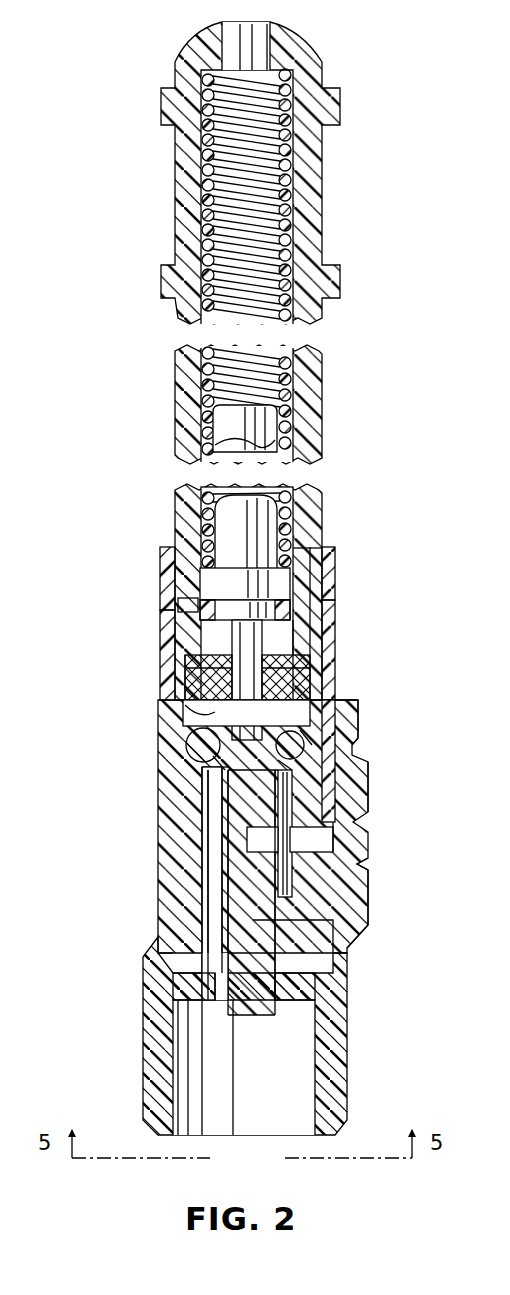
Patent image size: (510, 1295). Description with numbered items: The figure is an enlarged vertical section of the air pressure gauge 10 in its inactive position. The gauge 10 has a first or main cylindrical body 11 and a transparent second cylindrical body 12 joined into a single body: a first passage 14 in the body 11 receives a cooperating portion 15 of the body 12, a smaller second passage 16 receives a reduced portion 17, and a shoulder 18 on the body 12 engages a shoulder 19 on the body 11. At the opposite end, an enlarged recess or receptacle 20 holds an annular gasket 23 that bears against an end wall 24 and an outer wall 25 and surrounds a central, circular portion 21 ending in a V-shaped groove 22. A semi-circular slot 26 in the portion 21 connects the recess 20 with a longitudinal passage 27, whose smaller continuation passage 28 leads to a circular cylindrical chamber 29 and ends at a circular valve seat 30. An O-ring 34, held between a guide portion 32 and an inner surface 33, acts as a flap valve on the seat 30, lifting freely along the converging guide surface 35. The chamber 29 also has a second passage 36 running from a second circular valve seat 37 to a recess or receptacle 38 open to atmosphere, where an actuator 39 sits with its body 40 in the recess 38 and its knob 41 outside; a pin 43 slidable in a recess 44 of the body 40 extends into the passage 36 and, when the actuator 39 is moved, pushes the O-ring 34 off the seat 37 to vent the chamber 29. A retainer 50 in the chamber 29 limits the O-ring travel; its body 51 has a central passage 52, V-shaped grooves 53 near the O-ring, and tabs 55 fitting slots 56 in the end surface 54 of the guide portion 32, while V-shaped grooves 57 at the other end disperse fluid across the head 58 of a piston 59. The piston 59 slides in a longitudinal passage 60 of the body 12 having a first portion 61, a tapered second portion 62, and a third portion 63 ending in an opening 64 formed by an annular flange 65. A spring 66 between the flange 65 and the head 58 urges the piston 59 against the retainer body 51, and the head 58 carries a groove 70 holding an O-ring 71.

The air pressure gauge 10 is at (370, 945).
The first or main cylindrical body 11 is at (351, 1050).
The second cylindrical body 12 is at (326, 410).
The first passage 14 is at (185, 530).
The cooperating portion 15 is at (330, 560).
The second passage 16 is at (167, 625).
The cooperating reduced portion 17 is at (328, 620).
The shoulder 18 is at (165, 565).
The shoulder 19 is at (312, 600).
The enlarged recess or receptacle 20 is at (315, 1062).
The central, circular portion 21 is at (300, 1008).
The V-shaped groove 22 is at (258, 1017).
The annular gasket 23 is at (176, 980).
The end wall 24 is at (325, 915).
The outer wall 25 is at (352, 937).
The semi-circular slot 26 is at (218, 962).
The longitudinal passage 27 is at (200, 870).
The continuation passage 28 is at (220, 820).
The circular cylindrical chamber 29 is at (200, 708).
The circular valve seat 30 is at (288, 800).
The guide portion 32 is at (300, 742).
The inner surface 33 is at (208, 762).
The O-ring 34 is at (215, 770).
The guide surface 35 is at (186, 744).
The second passage 36 is at (285, 797).
The circular valve seat 37 is at (300, 760).
The recess or receptacle 38 is at (336, 830).
The actuator 39 is at (361, 864).
The body 40 is at (330, 885).
The knob 41 is at (369, 832).
The pin 43 is at (283, 835).
The recess 44 is at (285, 860).
The retainer 50 is at (300, 690).
The body 51 is at (340, 703).
The central passage 52 is at (245, 690).
The V-shaped groove 53 is at (195, 672).
The end surface 54 is at (183, 665).
The tabs 55 is at (308, 730).
The slot 56 is at (182, 702).
The V-shaped groove 57 is at (305, 665).
The head 58 is at (310, 645).
The piston 59 is at (205, 492).
The longitudinal passage 60 is at (205, 398).
The first portion 61 is at (300, 628).
The second portion 62 is at (300, 550).
The third portion 63 is at (292, 380).
The opening 64 is at (265, 45).
The annular flange 65 is at (291, 78).
The spring 66 is at (300, 493).
The groove 70 is at (232, 590).
The O-ring 71 is at (185, 603).